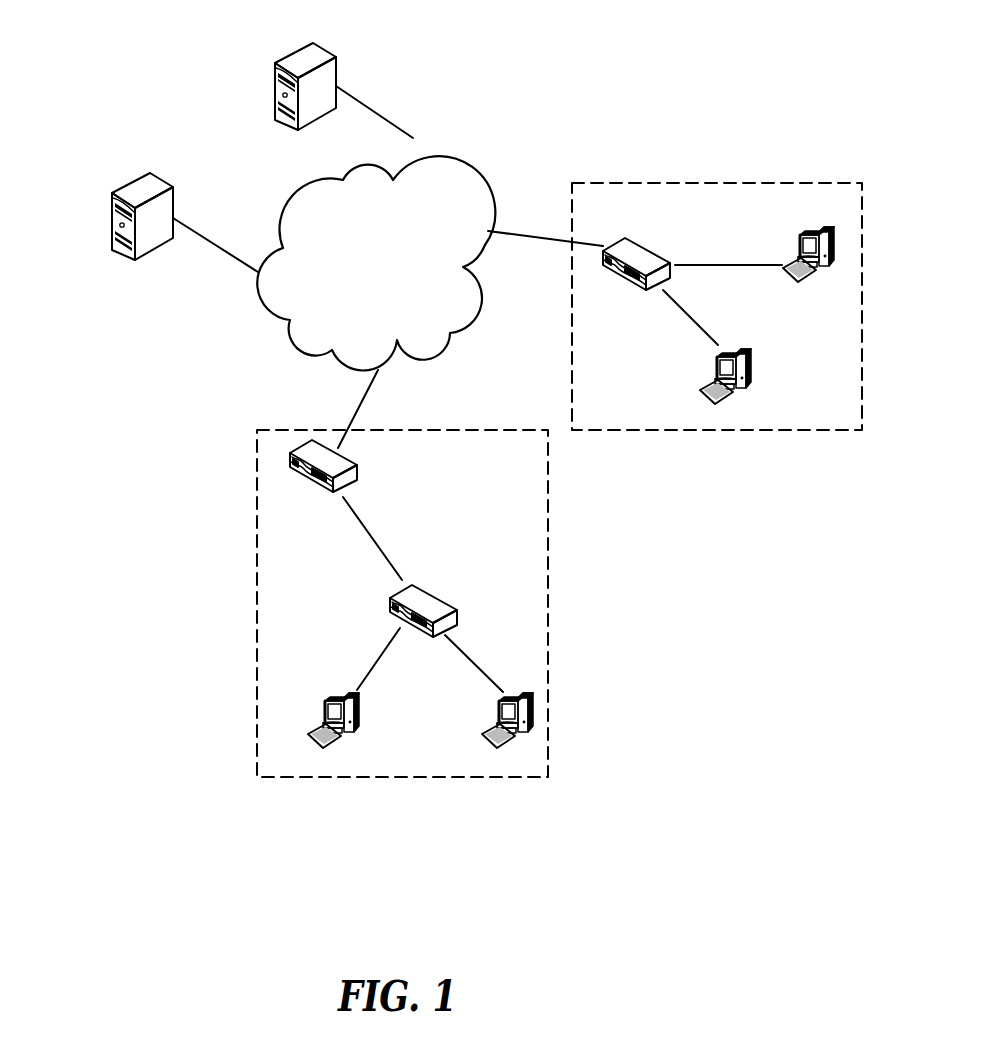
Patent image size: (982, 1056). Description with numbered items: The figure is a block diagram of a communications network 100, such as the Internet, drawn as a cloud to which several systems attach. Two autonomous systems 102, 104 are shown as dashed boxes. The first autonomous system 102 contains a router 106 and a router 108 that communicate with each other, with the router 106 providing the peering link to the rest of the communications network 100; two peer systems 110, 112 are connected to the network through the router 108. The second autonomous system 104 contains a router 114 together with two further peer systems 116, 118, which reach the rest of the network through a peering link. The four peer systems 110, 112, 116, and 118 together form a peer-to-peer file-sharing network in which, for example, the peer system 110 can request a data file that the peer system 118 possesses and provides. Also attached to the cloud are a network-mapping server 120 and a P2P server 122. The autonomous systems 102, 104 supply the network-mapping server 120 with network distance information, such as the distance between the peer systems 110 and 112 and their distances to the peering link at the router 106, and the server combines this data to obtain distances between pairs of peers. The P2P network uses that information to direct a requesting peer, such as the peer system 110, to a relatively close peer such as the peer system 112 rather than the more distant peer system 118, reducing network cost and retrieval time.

The communications network 100 is at (128, 77).
The autonomous system 102 is at (246, 609).
The autonomous system 104 is at (722, 176).
The router 106 is at (357, 481).
The router 108 is at (393, 589).
The peer system 110 is at (333, 692).
The peer system 112 is at (501, 692).
The router 114 is at (641, 248).
The peer system 116 is at (805, 233).
The peer system 118 is at (720, 352).
The network-mapping server 120 is at (133, 187).
The P2P server 122 is at (293, 54).